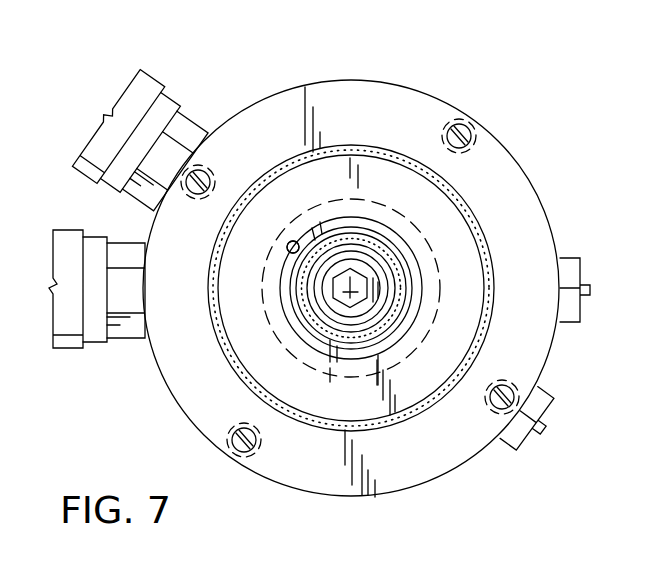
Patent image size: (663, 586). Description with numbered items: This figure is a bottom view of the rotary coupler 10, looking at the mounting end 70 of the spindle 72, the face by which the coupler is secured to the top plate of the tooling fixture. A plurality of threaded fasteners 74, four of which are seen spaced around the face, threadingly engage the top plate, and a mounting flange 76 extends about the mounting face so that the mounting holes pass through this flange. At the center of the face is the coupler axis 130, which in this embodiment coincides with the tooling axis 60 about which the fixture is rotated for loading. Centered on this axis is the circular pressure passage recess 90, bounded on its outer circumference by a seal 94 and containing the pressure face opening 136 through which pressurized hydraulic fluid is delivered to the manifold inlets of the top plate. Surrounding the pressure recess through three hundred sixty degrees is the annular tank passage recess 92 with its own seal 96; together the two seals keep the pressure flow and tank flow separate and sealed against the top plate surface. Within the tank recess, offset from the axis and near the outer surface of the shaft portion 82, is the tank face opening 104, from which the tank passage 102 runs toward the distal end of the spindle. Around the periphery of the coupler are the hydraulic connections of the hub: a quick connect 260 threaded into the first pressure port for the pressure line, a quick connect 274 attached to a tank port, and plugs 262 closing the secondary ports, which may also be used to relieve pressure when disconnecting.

The rotary coupler 10 is at (517, 110).
The tooling axis 60 is at (345, 282).
The mounting end 70 is at (337, 128).
The spindle 72 is at (405, 78).
The fasteners 74 is at (208, 172).
The mounting flange 76 is at (510, 178).
The shaft portion 82 is at (329, 378).
The pressure passage recess 90 is at (400, 279).
The tank passage recess 92 is at (467, 245).
The seal 94 is at (400, 303).
The seal 96 is at (483, 340).
The tank passage 102 is at (291, 241).
The tank face opening 104 is at (287, 250).
The coupler axis 130 is at (362, 278).
The pressure face opening 136 is at (337, 300).
The quick connect 260 is at (68, 338).
The plug 262 is at (575, 262).
The quick connect 274 is at (147, 83).